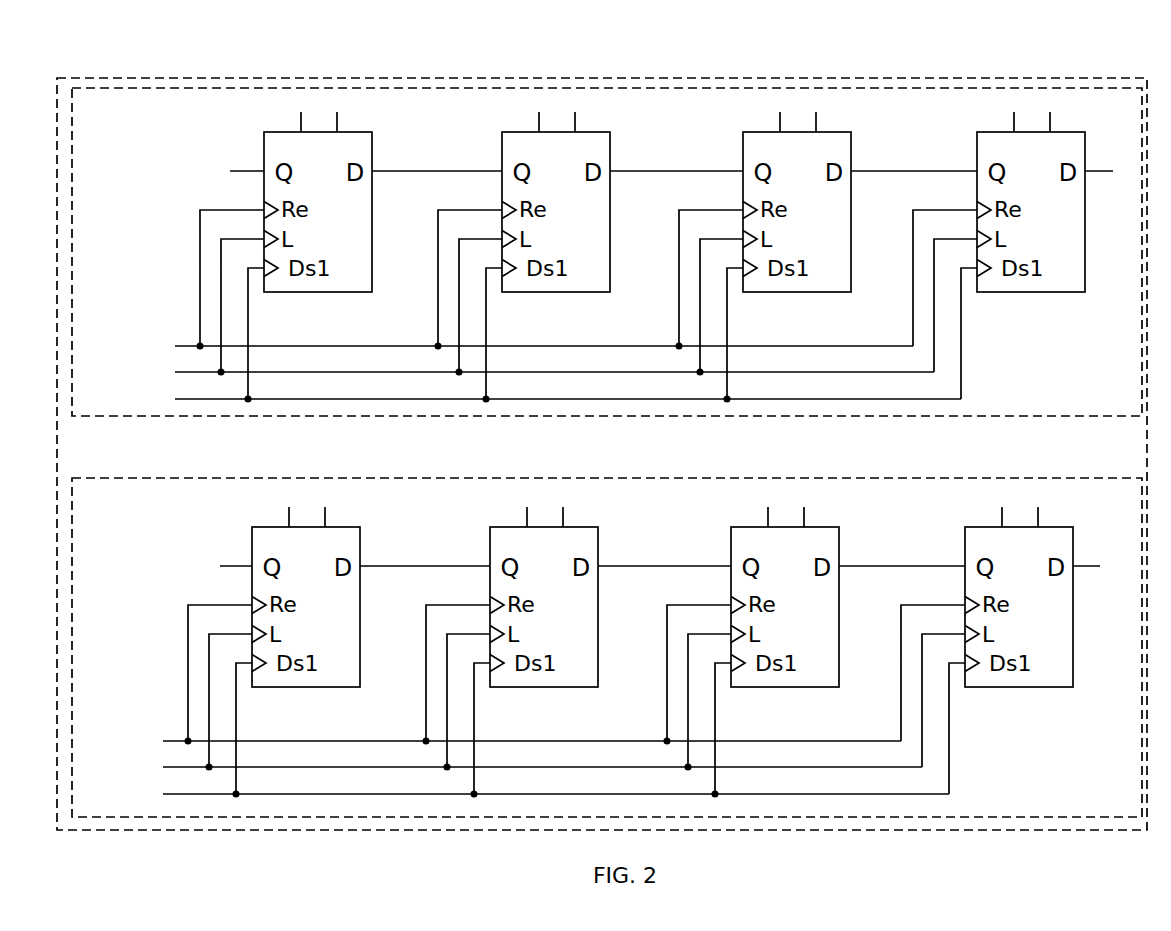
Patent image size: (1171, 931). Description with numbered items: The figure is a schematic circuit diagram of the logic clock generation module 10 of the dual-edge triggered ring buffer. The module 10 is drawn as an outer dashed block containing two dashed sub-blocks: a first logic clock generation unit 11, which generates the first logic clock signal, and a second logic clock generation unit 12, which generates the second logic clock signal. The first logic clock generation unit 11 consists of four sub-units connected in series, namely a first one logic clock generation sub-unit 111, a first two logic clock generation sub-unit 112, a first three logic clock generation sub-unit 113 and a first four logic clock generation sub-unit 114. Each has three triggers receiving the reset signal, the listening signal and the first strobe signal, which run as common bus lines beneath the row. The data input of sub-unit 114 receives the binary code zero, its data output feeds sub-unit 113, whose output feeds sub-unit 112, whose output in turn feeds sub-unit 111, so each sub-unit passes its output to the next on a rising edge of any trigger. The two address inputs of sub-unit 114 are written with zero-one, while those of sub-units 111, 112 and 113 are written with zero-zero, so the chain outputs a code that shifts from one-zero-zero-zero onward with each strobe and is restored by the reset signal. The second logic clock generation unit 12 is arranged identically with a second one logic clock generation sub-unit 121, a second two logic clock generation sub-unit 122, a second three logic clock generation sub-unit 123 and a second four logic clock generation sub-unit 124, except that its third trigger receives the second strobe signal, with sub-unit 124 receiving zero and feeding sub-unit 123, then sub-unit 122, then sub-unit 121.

The logic clock generation module 10 is at (527, 78).
The first logic clock generation unit 11 is at (688, 88).
The second logic clock generation unit 12 is at (611, 478).
The first one logic clock generation sub-unit 111 is at (283, 132).
The first two logic clock generation sub-unit 112 is at (527, 132).
The first three logic clock generation sub-unit 113 is at (768, 132).
The first four logic clock generation sub-unit 114 is at (997, 132).
The second one logic clock generation sub-unit 121 is at (269, 527).
The second two logic clock generation sub-unit 122 is at (512, 527).
The second three logic clock generation sub-unit 123 is at (755, 527).
The second four logic clock generation sub-unit 124 is at (983, 527).